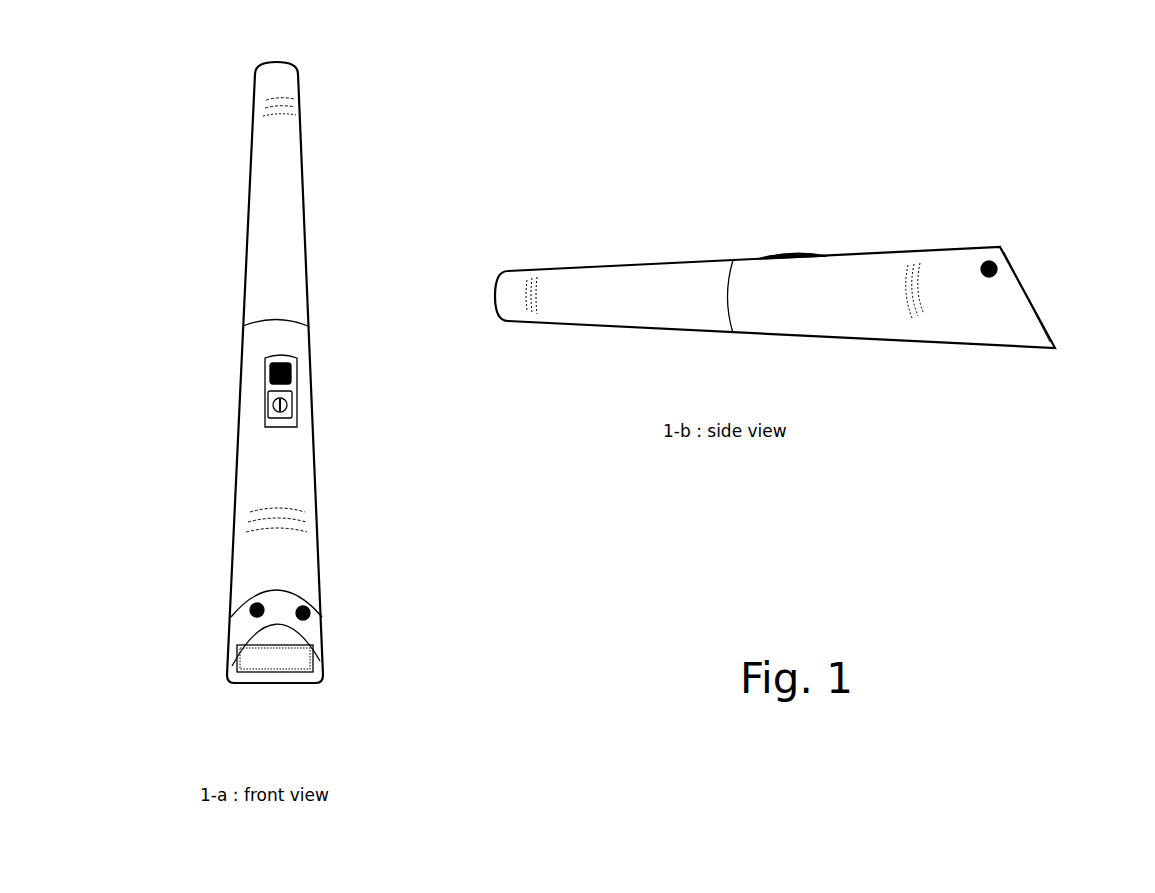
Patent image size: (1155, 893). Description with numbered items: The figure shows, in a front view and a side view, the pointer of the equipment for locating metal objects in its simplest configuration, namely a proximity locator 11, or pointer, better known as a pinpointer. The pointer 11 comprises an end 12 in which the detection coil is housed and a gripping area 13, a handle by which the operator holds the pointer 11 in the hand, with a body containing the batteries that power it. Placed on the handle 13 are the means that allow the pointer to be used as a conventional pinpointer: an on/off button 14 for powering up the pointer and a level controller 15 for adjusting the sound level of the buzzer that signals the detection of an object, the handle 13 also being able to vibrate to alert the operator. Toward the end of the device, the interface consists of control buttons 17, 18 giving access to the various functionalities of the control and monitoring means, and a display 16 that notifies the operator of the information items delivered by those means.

The proximity locator 11 is at (176, 49).
The end 12 is at (488, 215).
The gripping area 13 is at (525, 423).
The on/off button 14 is at (565, 286).
The level controller 15 is at (228, 395).
The display 16 is at (666, 461).
The control button 17 is at (318, 607).
The control button 18 is at (585, 406).